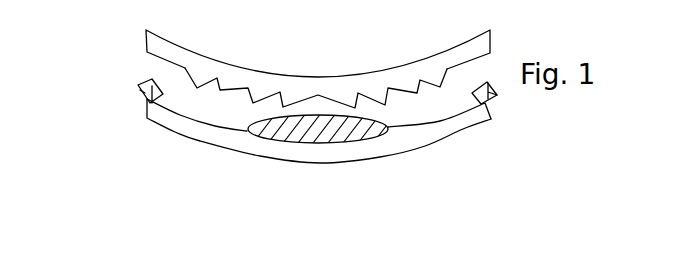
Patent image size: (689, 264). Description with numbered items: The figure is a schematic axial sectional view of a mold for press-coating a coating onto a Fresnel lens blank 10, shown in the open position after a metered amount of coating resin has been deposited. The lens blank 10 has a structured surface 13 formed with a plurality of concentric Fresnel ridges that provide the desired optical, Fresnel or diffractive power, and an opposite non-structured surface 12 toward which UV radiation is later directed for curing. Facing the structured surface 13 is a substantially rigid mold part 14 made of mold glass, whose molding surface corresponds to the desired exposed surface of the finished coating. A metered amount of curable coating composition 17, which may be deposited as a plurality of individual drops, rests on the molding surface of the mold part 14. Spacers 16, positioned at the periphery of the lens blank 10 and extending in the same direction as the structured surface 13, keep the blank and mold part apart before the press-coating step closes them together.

The Fresnel lens blank 10 is at (245, 75).
The non-structured surface 12 is at (315, 75).
The structured surface 13 is at (242, 89).
The mold part 14 is at (428, 137).
The spacers 16 is at (139, 87).
The curable coating composition 17 is at (308, 130).